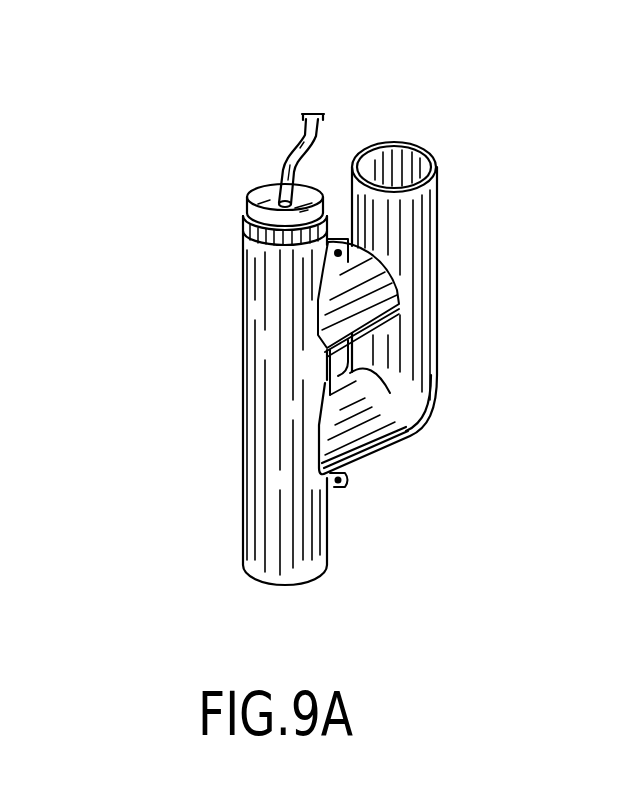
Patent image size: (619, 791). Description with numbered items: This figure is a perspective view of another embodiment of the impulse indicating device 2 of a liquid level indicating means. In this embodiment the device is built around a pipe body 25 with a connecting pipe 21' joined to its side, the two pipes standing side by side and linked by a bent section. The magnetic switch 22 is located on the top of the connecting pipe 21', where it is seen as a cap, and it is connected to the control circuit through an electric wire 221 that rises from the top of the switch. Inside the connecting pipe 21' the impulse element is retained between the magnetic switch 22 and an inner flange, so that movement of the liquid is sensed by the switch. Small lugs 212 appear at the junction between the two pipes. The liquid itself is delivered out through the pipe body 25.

The liquid supply assembly 2 is at (226, 393).
The connecting pipe 21' is at (256, 408).
The magnetic switch 22 is at (250, 198).
The electric wire 221 is at (294, 138).
The mounting lug 212 is at (334, 240).
The pipe body 25 is at (437, 310).